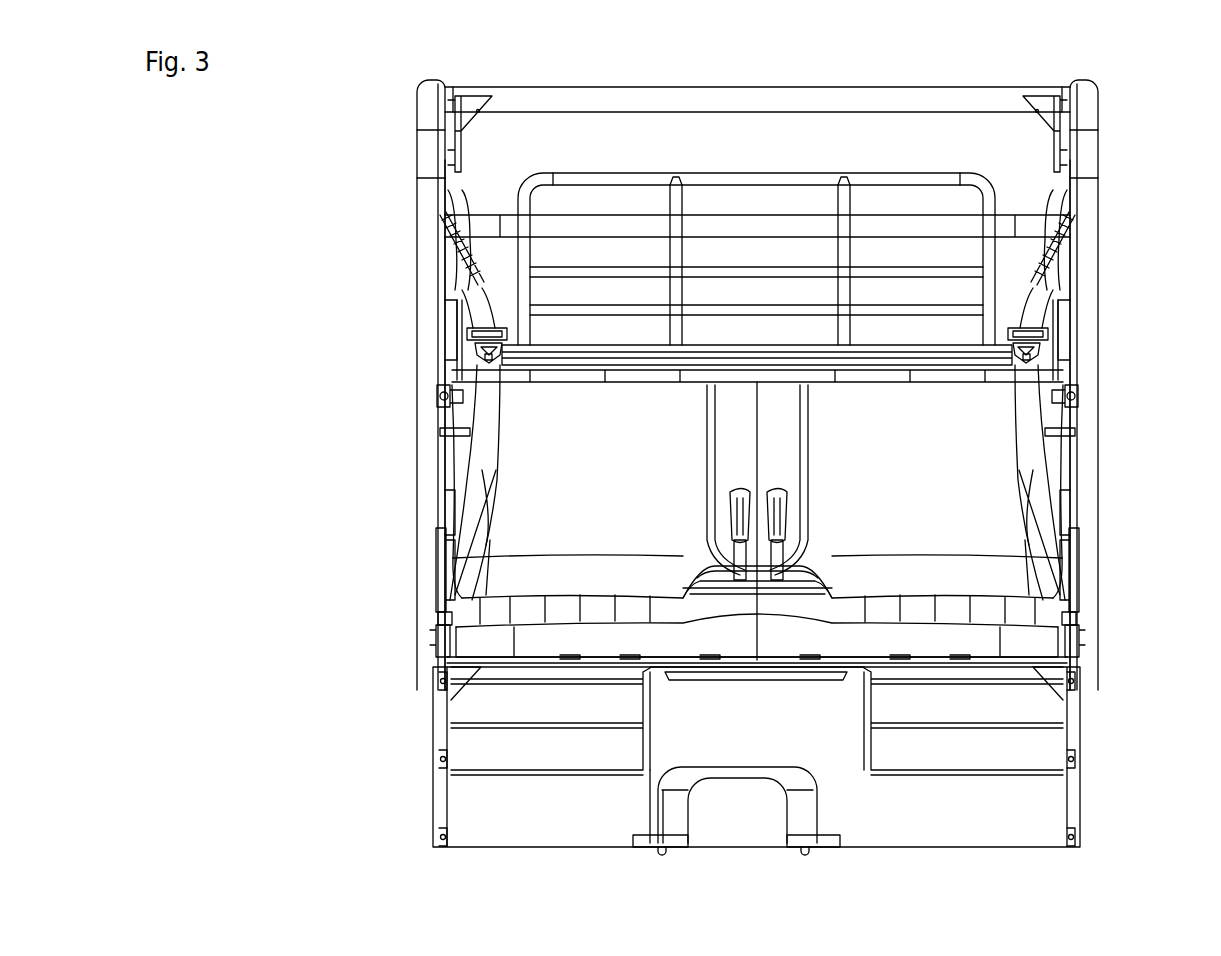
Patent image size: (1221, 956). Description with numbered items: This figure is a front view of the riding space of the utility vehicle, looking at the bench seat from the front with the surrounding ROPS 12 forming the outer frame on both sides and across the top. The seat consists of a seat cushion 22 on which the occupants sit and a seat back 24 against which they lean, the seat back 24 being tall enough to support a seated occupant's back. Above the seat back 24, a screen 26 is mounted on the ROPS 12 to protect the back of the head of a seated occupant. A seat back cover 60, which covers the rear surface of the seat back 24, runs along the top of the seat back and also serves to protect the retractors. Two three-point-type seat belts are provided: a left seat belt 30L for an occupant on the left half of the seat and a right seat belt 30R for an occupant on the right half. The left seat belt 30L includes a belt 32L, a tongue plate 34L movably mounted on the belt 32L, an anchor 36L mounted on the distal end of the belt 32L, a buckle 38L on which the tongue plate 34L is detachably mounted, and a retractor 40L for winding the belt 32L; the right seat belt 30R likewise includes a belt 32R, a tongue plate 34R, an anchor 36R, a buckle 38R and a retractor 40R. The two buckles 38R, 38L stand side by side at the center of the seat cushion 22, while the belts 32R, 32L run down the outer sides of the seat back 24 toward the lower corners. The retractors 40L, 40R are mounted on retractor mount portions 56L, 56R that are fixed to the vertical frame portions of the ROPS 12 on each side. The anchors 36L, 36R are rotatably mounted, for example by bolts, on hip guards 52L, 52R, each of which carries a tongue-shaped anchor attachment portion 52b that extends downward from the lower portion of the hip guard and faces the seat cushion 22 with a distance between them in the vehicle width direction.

The ROPS 12 is at (425, 270).
The seat cushion 22 is at (793, 650).
The seat back 24 is at (793, 449).
The screen 26 is at (768, 173).
The right seat belt 30R is at (518, 434).
The left seat belt 30L is at (997, 434).
The belt 32R is at (487, 490).
The belt 32L is at (1030, 495).
The tongue plate 34R is at (503, 365).
The tongue plate 34L is at (1012, 365).
The anchor 36R is at (440, 650).
The anchor 36L is at (1073, 650).
The buckle 38R is at (734, 510).
The buckle 38L is at (783, 510).
The retractor 40R is at (445, 405).
The retractor 40L is at (1070, 405).
The hip guard 52R is at (445, 580).
The hip guard 52L is at (1070, 580).
The anchor attachment portion 52b is at (440, 620).
The retractor mount portion 56R is at (445, 432).
The retractor mount portion 56L is at (1070, 432).
The seat back cover 60 is at (765, 360).